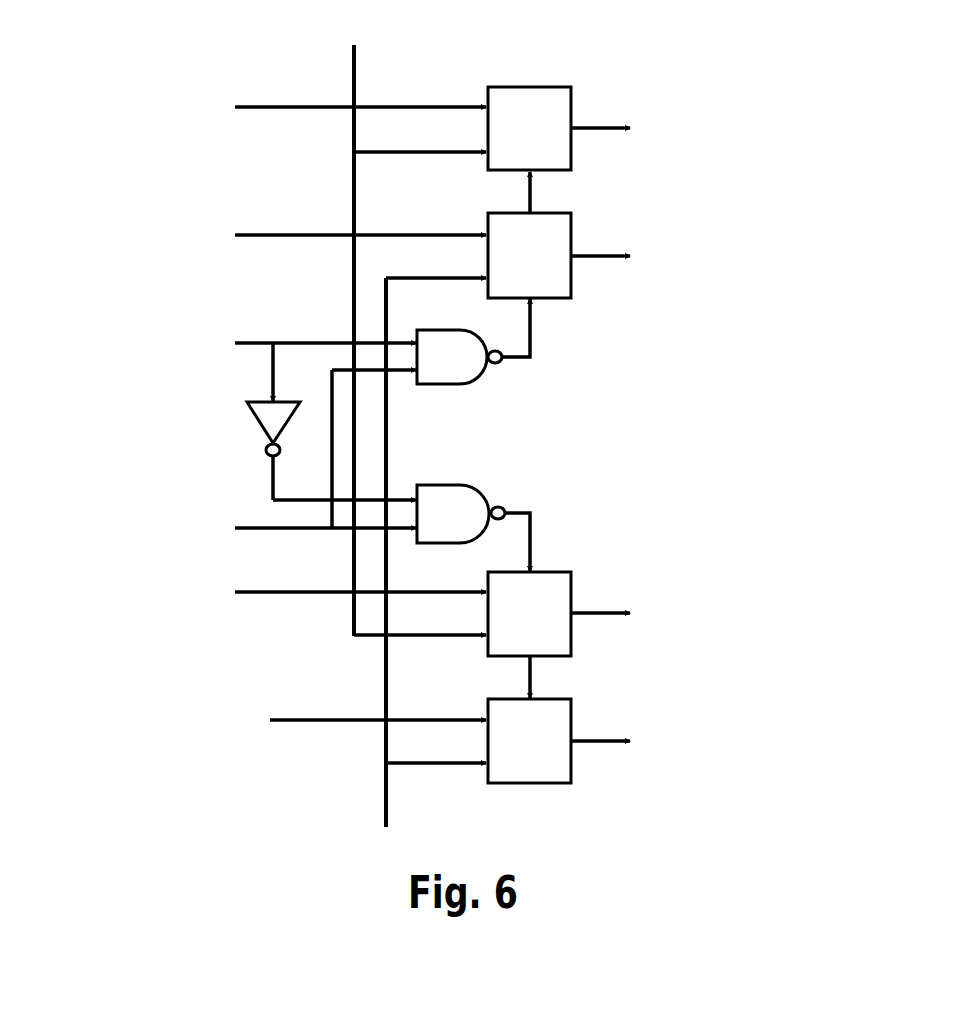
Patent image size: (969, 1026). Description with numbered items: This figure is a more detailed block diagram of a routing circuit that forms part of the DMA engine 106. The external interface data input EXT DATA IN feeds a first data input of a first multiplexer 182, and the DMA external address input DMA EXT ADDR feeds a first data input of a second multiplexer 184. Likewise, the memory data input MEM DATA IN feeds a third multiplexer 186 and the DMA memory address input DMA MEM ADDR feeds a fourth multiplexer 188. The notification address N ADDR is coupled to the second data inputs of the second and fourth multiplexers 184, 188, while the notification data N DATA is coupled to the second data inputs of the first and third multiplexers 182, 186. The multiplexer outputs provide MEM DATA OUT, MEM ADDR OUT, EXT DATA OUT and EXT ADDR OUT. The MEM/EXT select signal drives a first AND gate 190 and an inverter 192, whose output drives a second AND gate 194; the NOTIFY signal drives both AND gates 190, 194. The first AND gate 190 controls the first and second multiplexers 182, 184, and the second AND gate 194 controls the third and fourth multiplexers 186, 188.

The DMA engine 106 is at (620, 444).
The first multiplexer 182 is at (553, 87).
The second multiplexer 184 is at (553, 213).
The third multiplexer 186 is at (553, 572).
The fourth multiplexer 188 is at (553, 699).
The first AND gate 190 is at (440, 385).
The inverter 192 is at (262, 401).
The second AND gate 194 is at (440, 484).